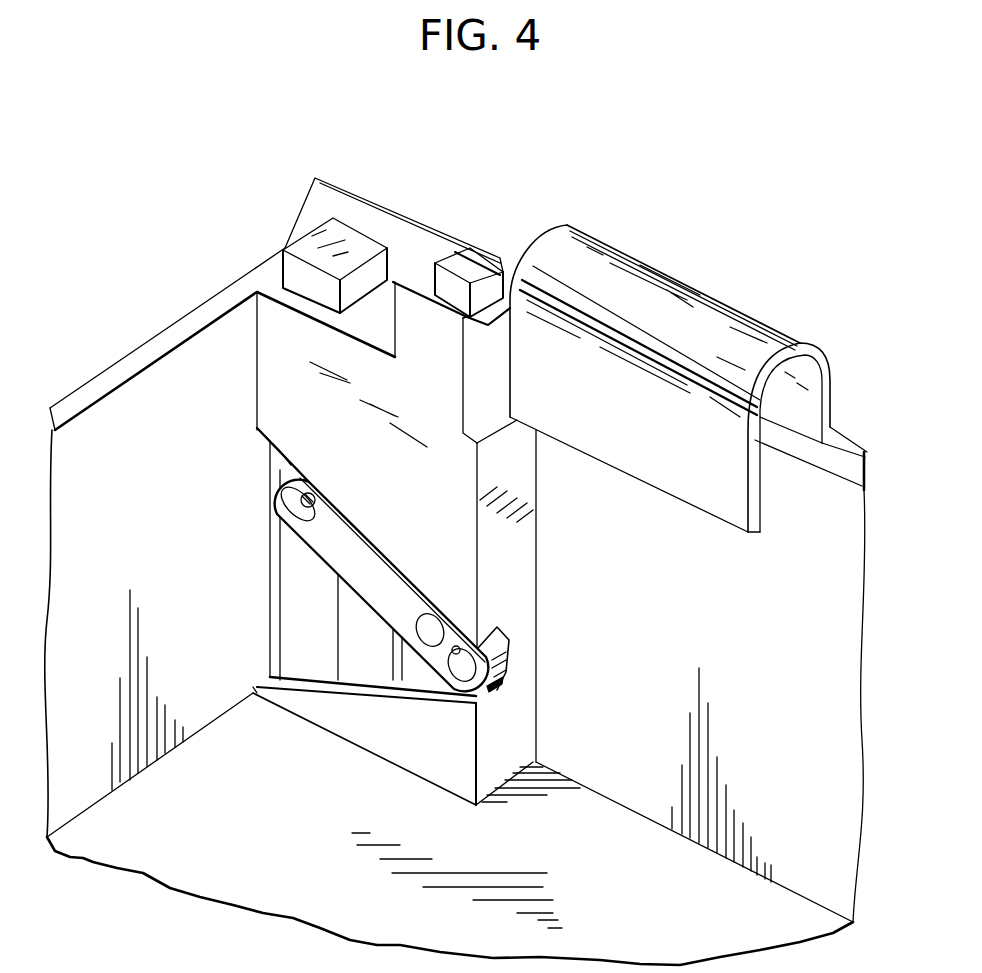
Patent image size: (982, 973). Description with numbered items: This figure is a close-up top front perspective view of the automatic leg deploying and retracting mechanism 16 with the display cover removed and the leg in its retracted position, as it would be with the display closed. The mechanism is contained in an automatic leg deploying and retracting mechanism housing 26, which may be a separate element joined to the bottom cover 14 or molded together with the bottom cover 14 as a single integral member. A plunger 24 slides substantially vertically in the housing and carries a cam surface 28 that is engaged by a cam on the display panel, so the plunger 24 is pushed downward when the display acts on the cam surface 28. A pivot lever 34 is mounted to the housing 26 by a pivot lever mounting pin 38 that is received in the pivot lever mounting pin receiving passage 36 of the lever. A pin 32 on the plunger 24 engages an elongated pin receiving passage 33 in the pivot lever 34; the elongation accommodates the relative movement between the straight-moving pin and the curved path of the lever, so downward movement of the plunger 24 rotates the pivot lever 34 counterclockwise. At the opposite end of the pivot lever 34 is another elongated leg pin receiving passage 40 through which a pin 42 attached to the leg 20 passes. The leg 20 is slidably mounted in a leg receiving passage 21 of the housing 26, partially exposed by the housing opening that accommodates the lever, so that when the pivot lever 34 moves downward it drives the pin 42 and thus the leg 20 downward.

The bottom cover 14 is at (167, 337).
The automatic leg deploying and retracting mechanism 16 is at (688, 622).
The leg 20 is at (295, 600).
The leg receiving passage 21 is at (283, 252).
The plunger 24 is at (507, 280).
The automatic leg deploying and retracting mechanism housing 26 is at (527, 567).
The cam surface 28 is at (477, 262).
The pin 32 is at (430, 633).
The pin receiving passage 33 is at (441, 650).
The pivot lever 34 is at (497, 647).
The pivot lever mounting pin receiving passage 36 is at (458, 645).
The pivot lever mounting pin 38 is at (492, 682).
The leg pin receiving passage 40 is at (317, 520).
The pin 42 is at (290, 500).